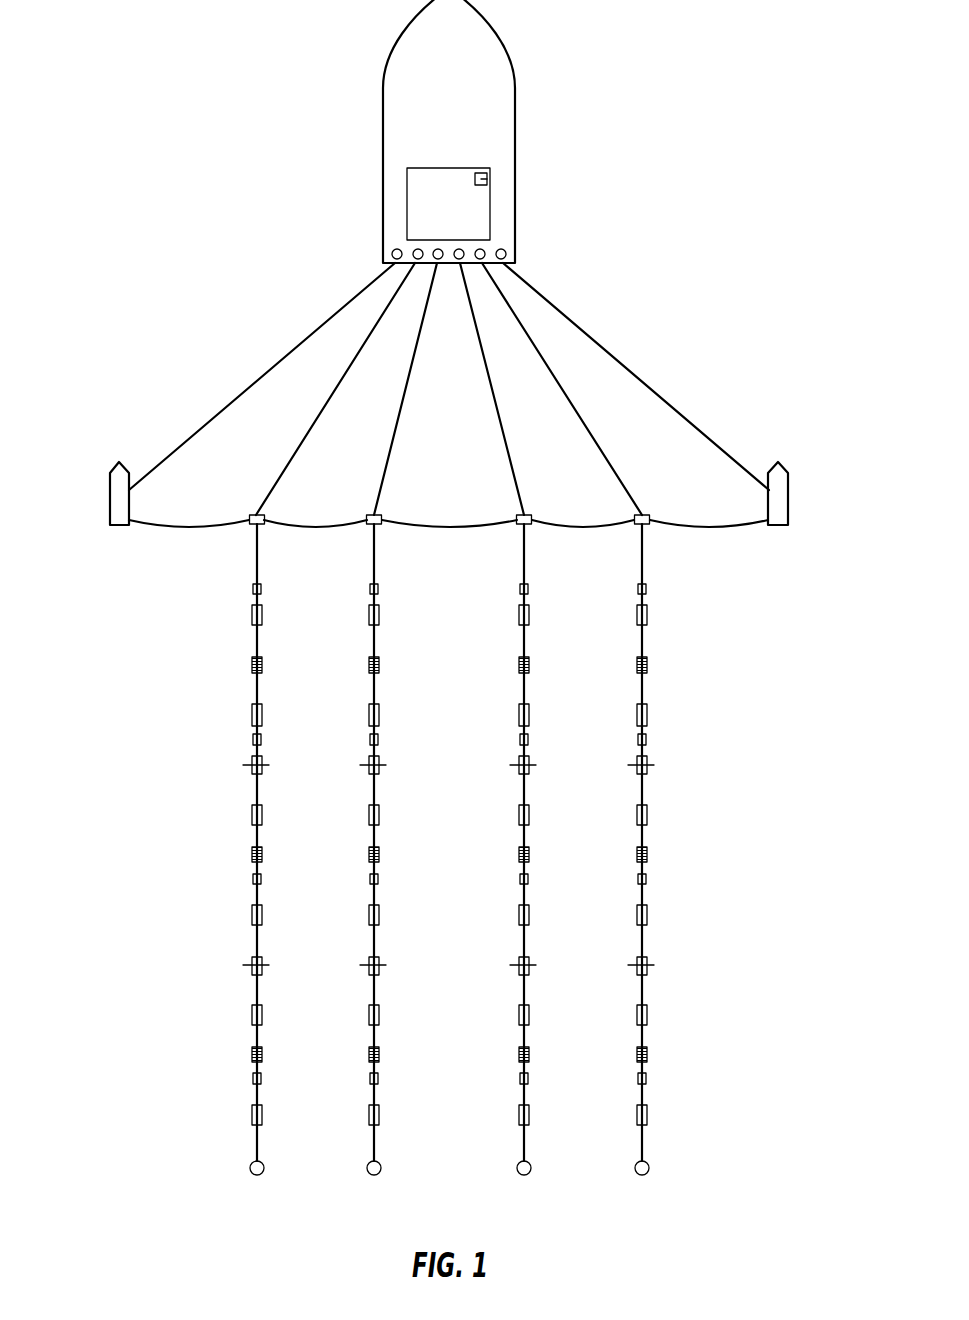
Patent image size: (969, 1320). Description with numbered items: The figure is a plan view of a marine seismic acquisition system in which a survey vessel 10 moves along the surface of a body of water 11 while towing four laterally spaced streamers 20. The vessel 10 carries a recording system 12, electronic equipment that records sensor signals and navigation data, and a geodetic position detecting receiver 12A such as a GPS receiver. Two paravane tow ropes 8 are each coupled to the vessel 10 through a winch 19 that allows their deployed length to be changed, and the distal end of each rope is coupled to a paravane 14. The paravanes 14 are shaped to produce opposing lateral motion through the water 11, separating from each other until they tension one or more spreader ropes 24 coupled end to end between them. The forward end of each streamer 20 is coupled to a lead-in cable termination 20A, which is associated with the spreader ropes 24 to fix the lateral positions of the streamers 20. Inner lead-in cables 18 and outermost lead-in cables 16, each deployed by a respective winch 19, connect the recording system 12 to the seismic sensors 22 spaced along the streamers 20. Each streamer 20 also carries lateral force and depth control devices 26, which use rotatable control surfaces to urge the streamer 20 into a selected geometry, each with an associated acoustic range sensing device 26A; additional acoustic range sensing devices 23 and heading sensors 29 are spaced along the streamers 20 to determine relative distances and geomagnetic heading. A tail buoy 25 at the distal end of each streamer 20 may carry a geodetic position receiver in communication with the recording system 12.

The paravane tow rope 8 is at (292, 355).
The survey vessel 10 is at (517, 88).
The body of water 11 is at (786, 254).
The recording system 12 is at (470, 210).
The geodetic position detecting receiver 12A is at (490, 178).
The paravane 14 is at (110, 500).
The outermost lead-in cable 16 is at (304, 440).
The inner lead-in cable 18 is at (393, 440).
The winch 19 is at (459, 249).
The streamer 20 is at (253, 570).
The lead-in cable termination 20A is at (376, 512).
The seismic sensor 22 is at (252, 615).
The acoustic range sensing device 23 is at (252, 665).
The spreader rope 24 is at (162, 523).
The tail buoy 25 is at (257, 1176).
The lateral force and depth control device 26 is at (253, 745).
The acoustic range sensing device 26A is at (243, 768).
The heading sensor 29 is at (262, 590).